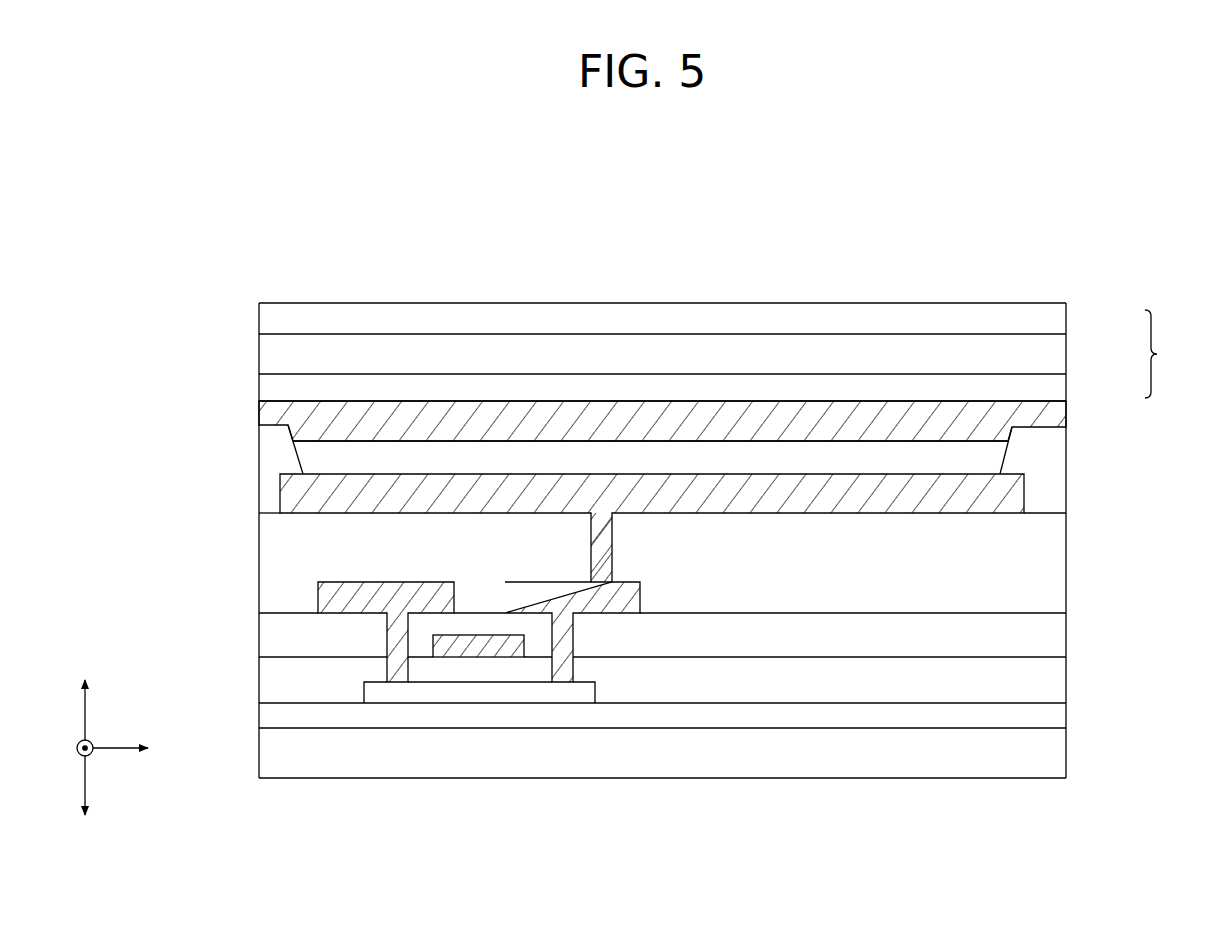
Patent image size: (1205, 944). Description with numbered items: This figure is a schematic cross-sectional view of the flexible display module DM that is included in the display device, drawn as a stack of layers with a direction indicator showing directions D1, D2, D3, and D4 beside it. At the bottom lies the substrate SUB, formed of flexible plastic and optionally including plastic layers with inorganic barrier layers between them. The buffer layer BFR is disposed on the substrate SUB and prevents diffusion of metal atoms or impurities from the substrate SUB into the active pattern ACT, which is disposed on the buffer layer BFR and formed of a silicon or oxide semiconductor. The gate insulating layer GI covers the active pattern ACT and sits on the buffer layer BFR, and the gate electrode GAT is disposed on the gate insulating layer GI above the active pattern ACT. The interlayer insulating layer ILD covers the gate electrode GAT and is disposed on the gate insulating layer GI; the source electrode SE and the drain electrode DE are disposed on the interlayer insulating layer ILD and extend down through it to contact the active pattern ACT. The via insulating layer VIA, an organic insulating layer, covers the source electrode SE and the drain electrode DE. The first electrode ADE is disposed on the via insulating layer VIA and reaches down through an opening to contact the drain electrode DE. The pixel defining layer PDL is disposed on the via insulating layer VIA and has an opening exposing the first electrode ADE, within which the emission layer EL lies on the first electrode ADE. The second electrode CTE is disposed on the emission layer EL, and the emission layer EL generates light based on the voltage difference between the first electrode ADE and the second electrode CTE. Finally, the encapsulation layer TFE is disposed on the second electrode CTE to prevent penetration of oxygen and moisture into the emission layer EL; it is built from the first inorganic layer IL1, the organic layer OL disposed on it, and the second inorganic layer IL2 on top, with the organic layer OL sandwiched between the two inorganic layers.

The flexible display module DM is at (684, 210).
The encapsulation layer TFE is at (1172, 354).
The second inorganic layer IL2 is at (1066, 319).
The organic layer OL is at (1066, 357).
The first inorganic layer IL1 is at (1066, 388).
The second electrode CTE is at (1066, 418).
The pixel defining layer PDL is at (1066, 470).
The emission layer EL is at (445, 450).
The first electrode ADE is at (350, 490).
The via insulating layer VIA is at (1066, 565).
The interlayer insulating layer ILD is at (1066, 637).
The gate insulating layer GI is at (1066, 685).
The buffer layer BFR is at (1066, 720).
The substrate SUB is at (1066, 753).
The source electrode SE is at (350, 605).
The drain electrode DE is at (588, 608).
The gate electrode GAT is at (502, 650).
The active pattern ACT is at (447, 696).
The first direction D1 is at (136, 748).
The second direction D2 is at (67, 748).
The third direction D3 is at (85, 695).
The fourth direction D4 is at (85, 802).